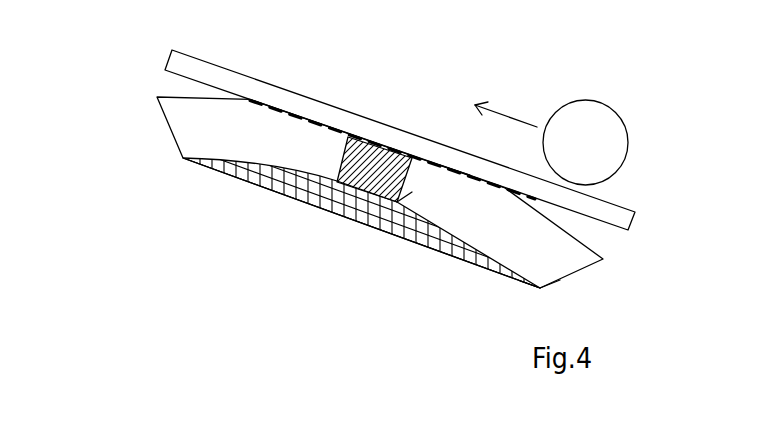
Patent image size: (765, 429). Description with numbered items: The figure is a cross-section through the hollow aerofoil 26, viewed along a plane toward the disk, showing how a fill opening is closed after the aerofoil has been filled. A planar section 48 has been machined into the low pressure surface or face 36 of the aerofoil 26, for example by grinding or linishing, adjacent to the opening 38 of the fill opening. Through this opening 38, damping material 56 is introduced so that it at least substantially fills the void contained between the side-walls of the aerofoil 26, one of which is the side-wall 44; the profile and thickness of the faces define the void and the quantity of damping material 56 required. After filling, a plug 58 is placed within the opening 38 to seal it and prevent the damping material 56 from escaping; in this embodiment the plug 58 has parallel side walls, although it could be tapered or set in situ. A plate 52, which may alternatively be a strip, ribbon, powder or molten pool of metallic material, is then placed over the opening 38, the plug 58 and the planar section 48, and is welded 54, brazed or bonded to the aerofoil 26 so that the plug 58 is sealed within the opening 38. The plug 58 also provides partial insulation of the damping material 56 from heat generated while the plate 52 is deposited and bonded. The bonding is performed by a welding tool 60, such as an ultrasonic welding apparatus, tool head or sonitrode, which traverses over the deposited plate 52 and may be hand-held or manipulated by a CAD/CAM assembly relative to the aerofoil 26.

The aerofoil 26 is at (130, 100).
The low pressure surface or face 36 is at (595, 252).
The opening 38 is at (407, 177).
The side-wall 44 is at (532, 290).
The planar section 48 is at (462, 177).
The plate 52 is at (238, 87).
The weld 54 is at (313, 122).
The damping material 56 is at (285, 182).
The plug 58 is at (377, 167).
The welding tool 60 is at (608, 126).